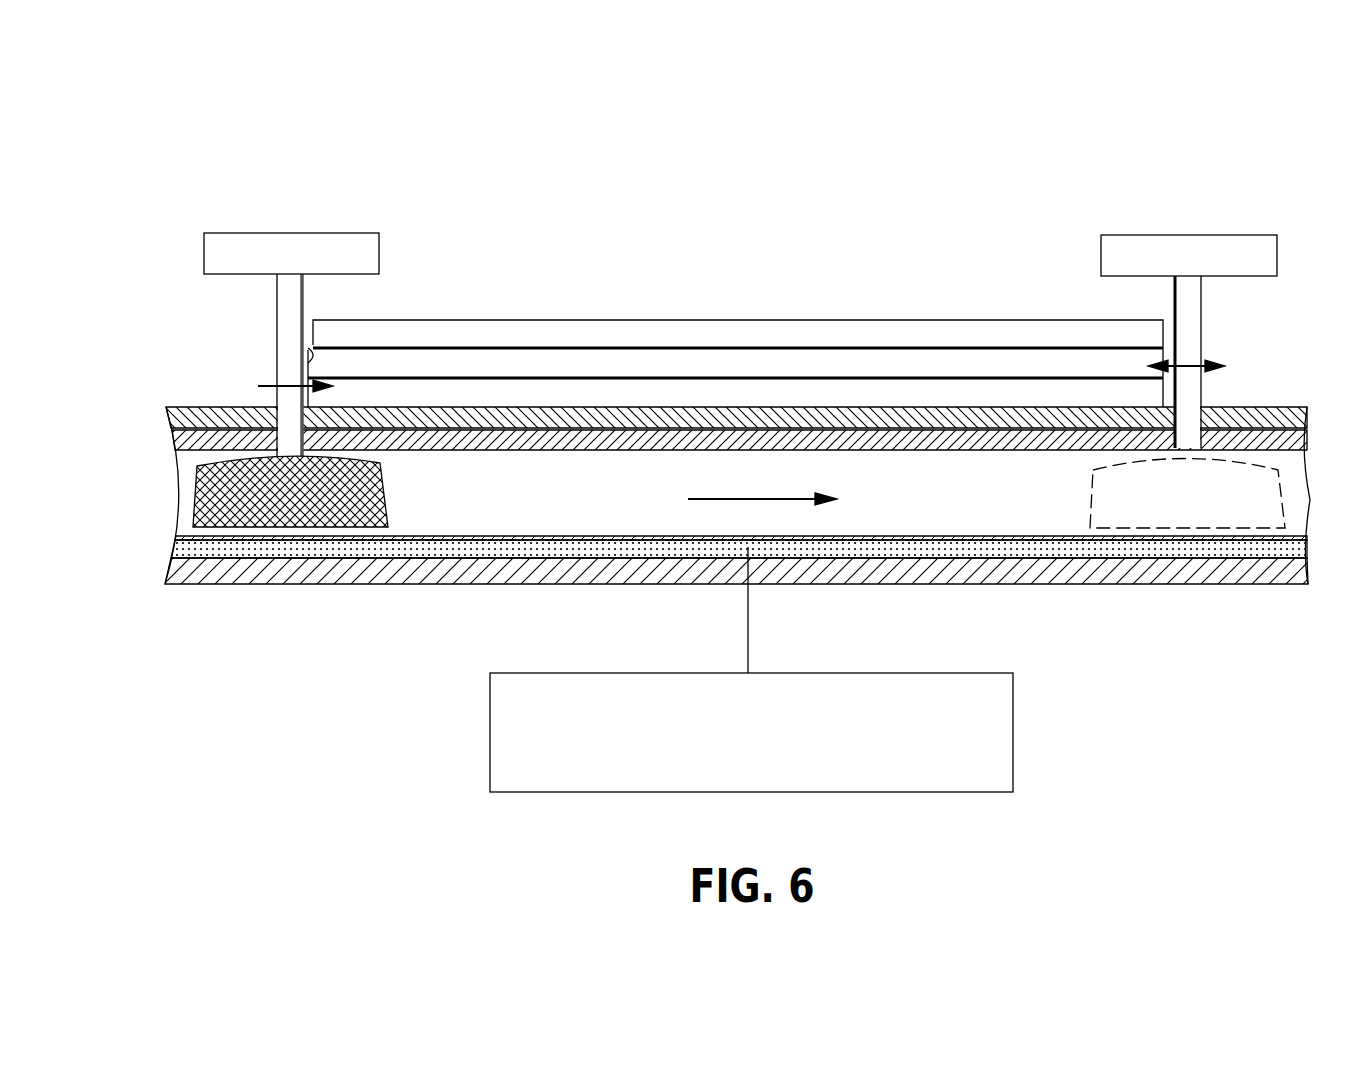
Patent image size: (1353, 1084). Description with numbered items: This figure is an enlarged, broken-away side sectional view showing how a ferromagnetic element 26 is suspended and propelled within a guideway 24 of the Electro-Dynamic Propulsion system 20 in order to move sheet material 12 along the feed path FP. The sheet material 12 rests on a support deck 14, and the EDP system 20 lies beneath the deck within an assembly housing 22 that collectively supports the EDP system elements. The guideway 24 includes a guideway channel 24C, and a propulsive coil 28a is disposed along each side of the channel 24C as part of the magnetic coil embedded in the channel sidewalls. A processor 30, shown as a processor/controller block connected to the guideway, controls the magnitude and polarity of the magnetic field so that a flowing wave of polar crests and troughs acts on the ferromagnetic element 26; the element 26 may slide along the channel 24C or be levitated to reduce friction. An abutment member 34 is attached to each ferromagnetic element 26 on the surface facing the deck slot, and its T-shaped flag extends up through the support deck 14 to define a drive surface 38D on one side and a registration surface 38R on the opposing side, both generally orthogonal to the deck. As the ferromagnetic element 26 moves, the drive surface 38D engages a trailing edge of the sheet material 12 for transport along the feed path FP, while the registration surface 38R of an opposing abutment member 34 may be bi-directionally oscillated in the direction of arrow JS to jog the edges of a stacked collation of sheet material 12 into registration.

The sheet material 12 is at (771, 338).
The support deck 14 is at (868, 407).
The Electro-Dynamic Propulsion (EDP) system 20 is at (383, 187).
The assembly housing 22 is at (610, 433).
The guideway 24 is at (650, 242).
The guideway channel 24C is at (507, 502).
The ferromagnetic element 26 is at (363, 488).
The propulsive coil 28a is at (403, 547).
The processor 30 is at (490, 697).
The abutment member 34 is at (263, 258).
The drive surface 38D is at (308, 363).
The registration surface 38R is at (1177, 352).
The jog direction arrow JS is at (1187, 362).
The feed path FP is at (762, 487).